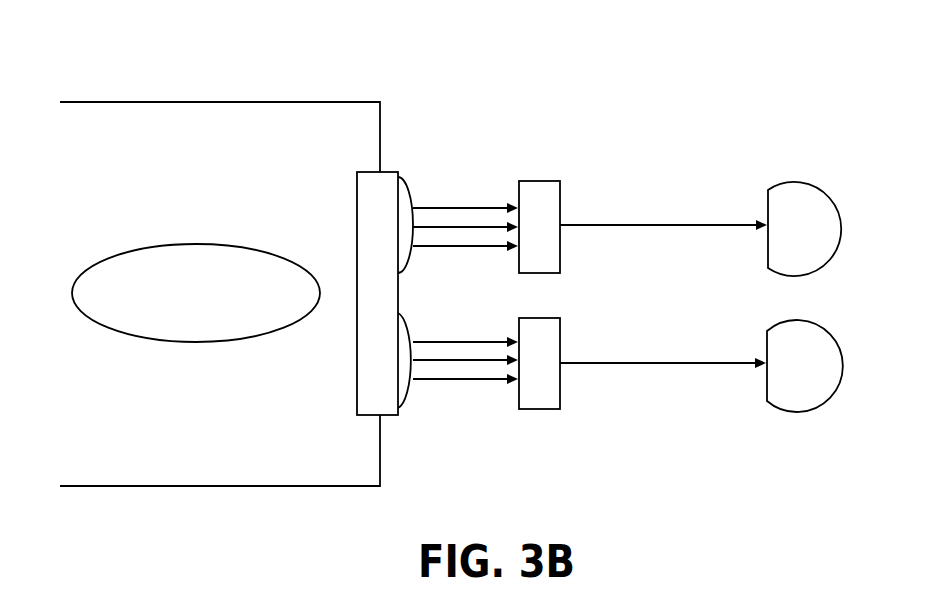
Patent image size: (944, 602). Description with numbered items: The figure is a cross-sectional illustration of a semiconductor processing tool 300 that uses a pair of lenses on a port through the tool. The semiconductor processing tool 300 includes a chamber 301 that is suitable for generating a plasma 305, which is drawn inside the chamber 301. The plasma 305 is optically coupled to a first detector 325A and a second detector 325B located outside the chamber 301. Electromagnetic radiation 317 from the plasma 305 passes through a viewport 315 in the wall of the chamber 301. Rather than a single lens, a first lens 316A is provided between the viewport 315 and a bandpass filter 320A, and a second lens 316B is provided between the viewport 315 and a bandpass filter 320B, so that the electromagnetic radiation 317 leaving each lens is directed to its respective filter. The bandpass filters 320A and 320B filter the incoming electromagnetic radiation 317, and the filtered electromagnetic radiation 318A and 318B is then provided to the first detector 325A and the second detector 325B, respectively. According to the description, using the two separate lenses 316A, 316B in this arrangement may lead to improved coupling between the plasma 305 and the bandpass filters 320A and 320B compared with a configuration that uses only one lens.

The semiconductor processing tool 300 is at (724, 44).
The chamber 301 is at (203, 102).
The plasma 305 is at (178, 257).
The viewport 315 is at (385, 180).
The first lens 316A is at (404, 194).
The second lens 316B is at (402, 390).
The electromagnetic radiation 317 is at (447, 207).
The filtered electromagnetic radiation 318A is at (625, 225).
The filtered electromagnetic radiation 318B is at (620, 362).
The bandpass filter 320A is at (542, 190).
The bandpass filter 320B is at (542, 400).
The first detector 325A is at (800, 193).
The second detector 325B is at (802, 330).